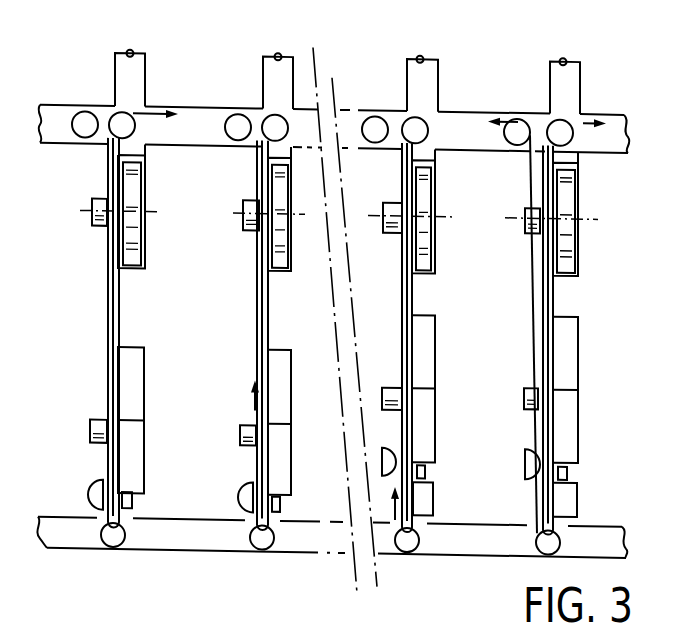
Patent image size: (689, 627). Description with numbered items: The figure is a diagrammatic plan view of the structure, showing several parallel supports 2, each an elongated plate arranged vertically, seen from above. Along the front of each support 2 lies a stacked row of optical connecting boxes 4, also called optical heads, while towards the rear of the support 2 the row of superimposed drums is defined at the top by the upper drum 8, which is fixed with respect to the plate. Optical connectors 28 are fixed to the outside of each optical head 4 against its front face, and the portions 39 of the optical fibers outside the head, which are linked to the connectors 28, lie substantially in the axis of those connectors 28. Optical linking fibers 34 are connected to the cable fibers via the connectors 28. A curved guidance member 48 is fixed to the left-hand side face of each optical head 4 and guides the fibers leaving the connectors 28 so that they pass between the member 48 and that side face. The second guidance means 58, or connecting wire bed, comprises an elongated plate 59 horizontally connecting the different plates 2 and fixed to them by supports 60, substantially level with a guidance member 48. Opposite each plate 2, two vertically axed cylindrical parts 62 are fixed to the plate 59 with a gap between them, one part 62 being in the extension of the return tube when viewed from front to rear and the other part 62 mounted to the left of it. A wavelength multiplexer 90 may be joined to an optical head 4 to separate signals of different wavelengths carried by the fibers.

The support 2 is at (116, 303).
The optical connecting box 4 is at (130, 379).
The upper drum 8 is at (135, 180).
The optical connector 28 is at (133, 497).
The optical linking fiber 34 is at (76, 449).
The portion of optical fiber outside head 39 is at (133, 512).
The guidance member 48 is at (96, 487).
The second guidance means 58 is at (102, 66).
The elongated plate 59 is at (53, 104).
The support 60 is at (140, 69).
The cylindrical part 62 is at (111, 128).
The wavelength multiplexer 90 is at (425, 490).